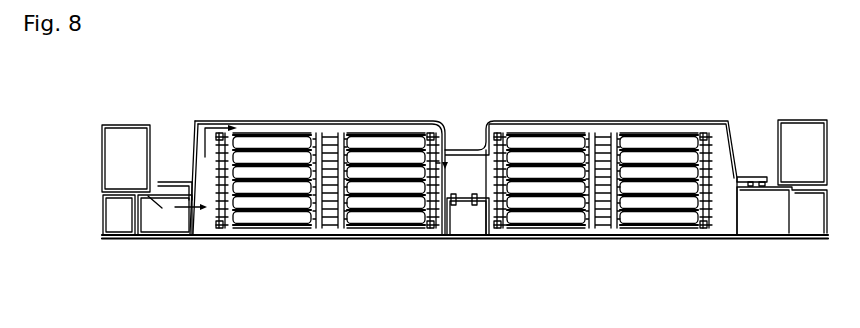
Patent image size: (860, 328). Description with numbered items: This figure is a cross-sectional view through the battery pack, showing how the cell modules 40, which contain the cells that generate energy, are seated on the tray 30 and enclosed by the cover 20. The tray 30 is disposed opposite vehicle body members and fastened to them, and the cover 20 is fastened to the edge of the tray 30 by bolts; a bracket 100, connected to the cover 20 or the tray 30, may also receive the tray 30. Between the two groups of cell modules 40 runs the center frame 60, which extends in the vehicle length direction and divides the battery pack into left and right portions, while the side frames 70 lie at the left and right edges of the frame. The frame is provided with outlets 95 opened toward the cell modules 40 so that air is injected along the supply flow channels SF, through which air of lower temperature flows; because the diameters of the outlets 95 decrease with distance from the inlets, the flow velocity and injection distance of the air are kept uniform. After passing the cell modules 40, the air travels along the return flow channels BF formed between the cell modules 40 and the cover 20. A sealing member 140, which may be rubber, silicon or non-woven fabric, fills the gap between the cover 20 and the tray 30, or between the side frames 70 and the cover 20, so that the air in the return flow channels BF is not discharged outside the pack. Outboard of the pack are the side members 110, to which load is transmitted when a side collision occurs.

The cover 20 is at (218, 121).
The tray 30 is at (217, 232).
The cell modules 40 is at (284, 214).
The center frame 60 is at (492, 237).
The side frames 70 is at (102, 214).
The outlets 95 is at (180, 232).
The bracket 100 is at (498, 138).
The side members 110 is at (100, 122).
The sealing member 140 is at (750, 177).
The supply flow channels SF is at (153, 185).
The return flow channels BF is at (202, 145).